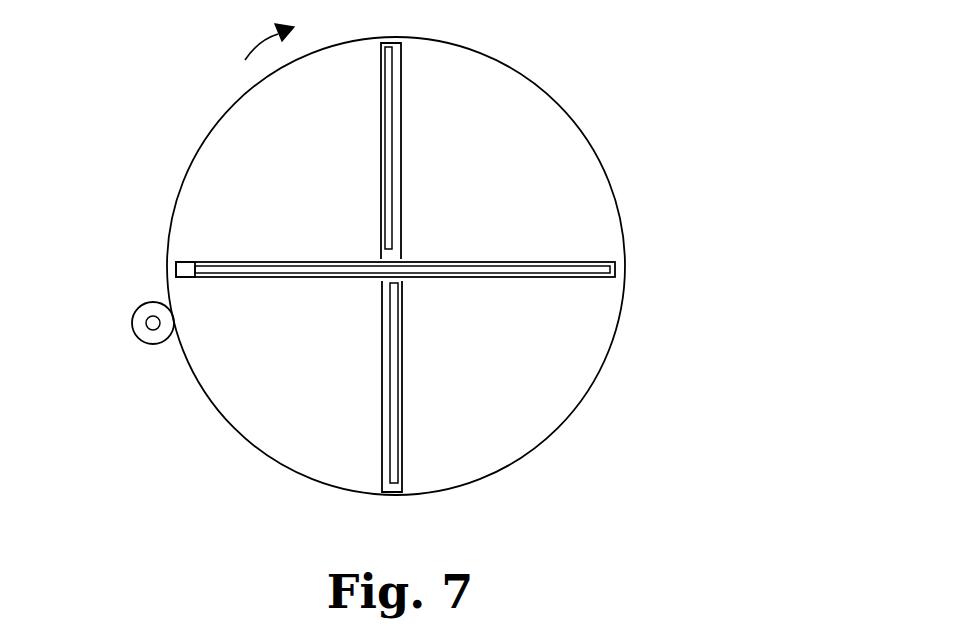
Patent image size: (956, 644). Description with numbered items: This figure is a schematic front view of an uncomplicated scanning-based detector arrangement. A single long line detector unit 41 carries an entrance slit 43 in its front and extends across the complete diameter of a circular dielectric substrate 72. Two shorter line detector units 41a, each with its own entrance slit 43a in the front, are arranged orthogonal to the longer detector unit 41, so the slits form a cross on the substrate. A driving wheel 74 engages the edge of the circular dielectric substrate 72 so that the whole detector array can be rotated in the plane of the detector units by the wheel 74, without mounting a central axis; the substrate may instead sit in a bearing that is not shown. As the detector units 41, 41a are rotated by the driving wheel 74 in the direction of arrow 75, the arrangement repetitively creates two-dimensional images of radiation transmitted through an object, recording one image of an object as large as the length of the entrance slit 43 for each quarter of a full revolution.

The circular dielectric substrate 72 is at (528, 112).
The single line detector unit 41 is at (205, 262).
The shorter line detector units 41a is at (401, 168).
The entrance slit 43 is at (190, 262).
The entrance slit 43a is at (387, 113).
The driving wheel 74 is at (131, 321).
The arrow 75 is at (272, 33).